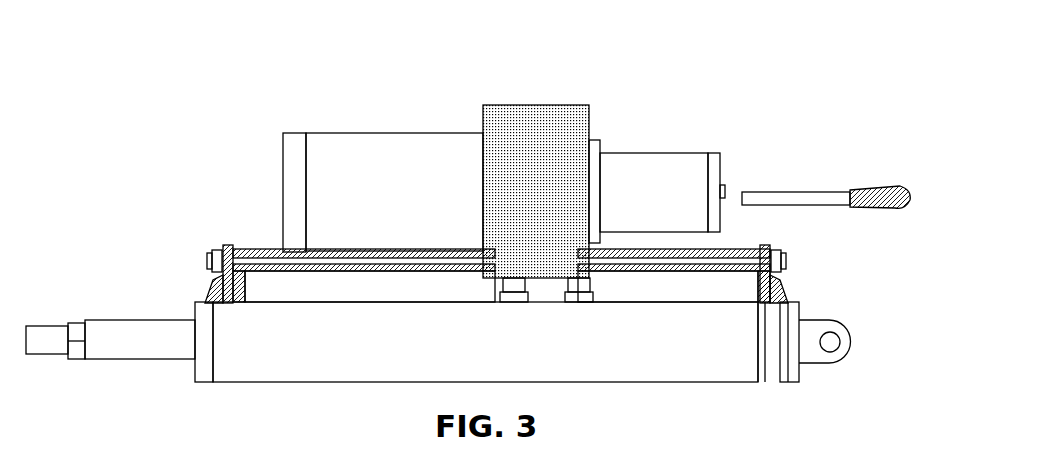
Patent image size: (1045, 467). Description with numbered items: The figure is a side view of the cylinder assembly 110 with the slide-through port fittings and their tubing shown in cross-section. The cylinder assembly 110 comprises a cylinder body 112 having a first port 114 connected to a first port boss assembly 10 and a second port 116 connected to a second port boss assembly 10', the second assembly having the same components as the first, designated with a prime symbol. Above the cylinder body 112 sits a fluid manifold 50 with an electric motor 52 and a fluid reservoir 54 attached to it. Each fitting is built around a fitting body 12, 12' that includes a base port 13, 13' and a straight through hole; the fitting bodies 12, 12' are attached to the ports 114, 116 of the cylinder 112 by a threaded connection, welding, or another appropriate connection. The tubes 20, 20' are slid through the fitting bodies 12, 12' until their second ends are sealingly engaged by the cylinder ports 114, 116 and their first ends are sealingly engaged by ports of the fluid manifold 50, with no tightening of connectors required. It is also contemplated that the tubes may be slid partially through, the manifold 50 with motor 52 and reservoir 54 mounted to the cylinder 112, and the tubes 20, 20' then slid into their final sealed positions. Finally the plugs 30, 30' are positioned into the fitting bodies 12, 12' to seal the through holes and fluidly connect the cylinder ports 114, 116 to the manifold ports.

The cylinder assembly 110 is at (742, 118).
The cylinder body 112 is at (443, 364).
The first port 114 is at (226, 303).
The second port 116 is at (757, 382).
The fluid reservoir 54 is at (392, 203).
The fluid manifold 50 is at (546, 191).
The electric motor 52 is at (665, 204).
The first port boss assembly 10 is at (170, 230).
The plug 30 is at (169, 250).
The fitting body 12 is at (172, 283).
The tube 20 is at (364, 347).
The base port 13 is at (364, 291).
The second port boss assembly 10' is at (825, 265).
The plug 30' is at (819, 274).
The fitting body 12' is at (820, 296).
The tube 20' is at (674, 350).
The base port 13' is at (668, 296).